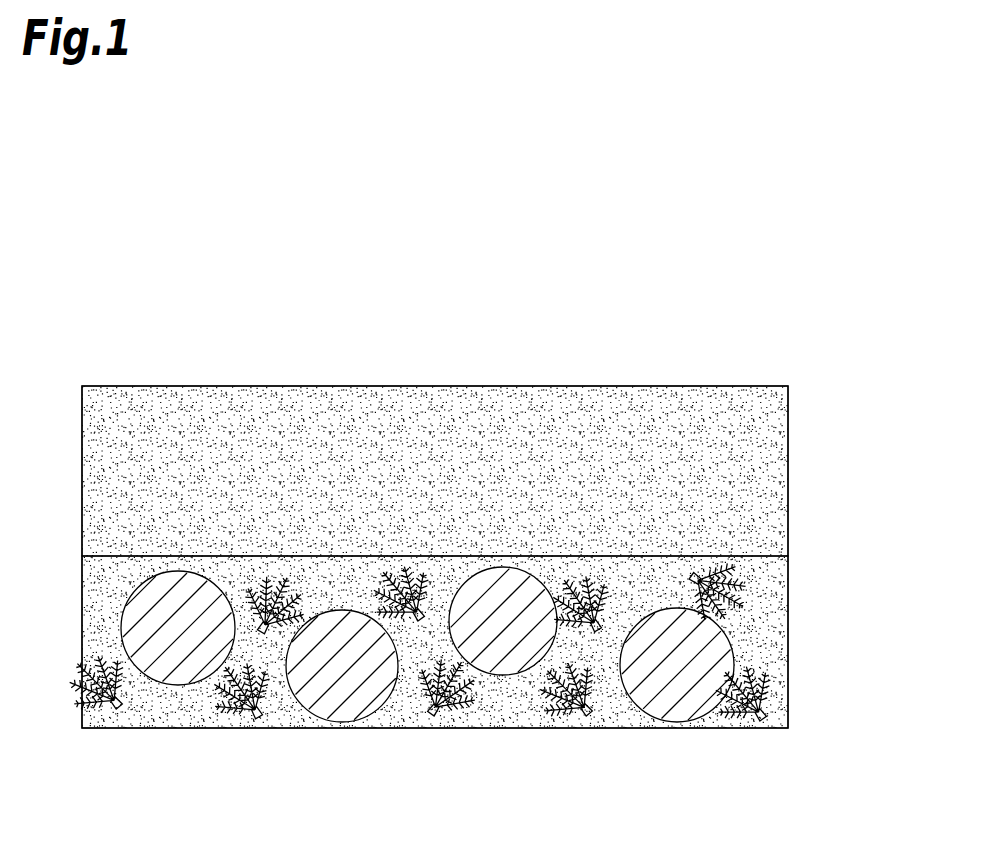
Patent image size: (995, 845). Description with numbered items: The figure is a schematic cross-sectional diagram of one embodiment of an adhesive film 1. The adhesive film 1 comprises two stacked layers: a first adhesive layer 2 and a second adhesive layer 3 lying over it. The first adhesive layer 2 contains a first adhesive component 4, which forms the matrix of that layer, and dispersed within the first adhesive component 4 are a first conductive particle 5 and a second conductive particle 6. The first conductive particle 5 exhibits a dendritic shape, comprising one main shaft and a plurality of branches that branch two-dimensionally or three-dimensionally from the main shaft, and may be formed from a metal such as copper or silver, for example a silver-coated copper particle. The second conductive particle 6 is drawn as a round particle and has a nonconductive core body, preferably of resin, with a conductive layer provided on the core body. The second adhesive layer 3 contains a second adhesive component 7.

The adhesive film 1 is at (728, 293).
The first adhesive layer 2 is at (845, 583).
The second adhesive layer 3 is at (435, 471).
The first adhesive component 4 is at (774, 646).
The first conductive particle 5 is at (126, 706).
The second conductive particle 6 is at (177, 672).
The second adhesive component 7 is at (776, 467).